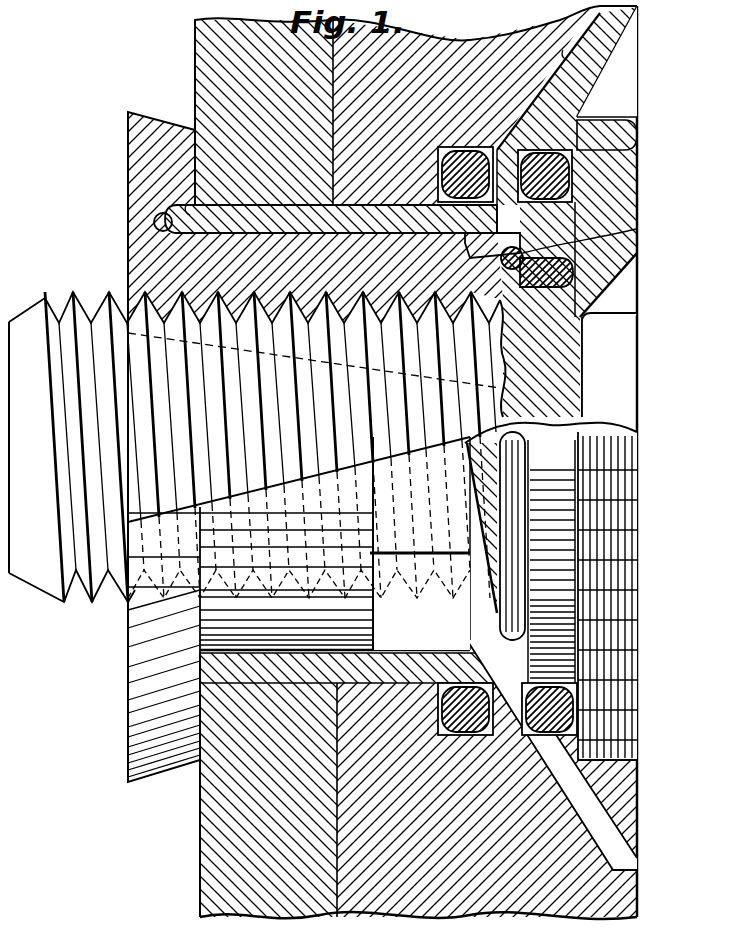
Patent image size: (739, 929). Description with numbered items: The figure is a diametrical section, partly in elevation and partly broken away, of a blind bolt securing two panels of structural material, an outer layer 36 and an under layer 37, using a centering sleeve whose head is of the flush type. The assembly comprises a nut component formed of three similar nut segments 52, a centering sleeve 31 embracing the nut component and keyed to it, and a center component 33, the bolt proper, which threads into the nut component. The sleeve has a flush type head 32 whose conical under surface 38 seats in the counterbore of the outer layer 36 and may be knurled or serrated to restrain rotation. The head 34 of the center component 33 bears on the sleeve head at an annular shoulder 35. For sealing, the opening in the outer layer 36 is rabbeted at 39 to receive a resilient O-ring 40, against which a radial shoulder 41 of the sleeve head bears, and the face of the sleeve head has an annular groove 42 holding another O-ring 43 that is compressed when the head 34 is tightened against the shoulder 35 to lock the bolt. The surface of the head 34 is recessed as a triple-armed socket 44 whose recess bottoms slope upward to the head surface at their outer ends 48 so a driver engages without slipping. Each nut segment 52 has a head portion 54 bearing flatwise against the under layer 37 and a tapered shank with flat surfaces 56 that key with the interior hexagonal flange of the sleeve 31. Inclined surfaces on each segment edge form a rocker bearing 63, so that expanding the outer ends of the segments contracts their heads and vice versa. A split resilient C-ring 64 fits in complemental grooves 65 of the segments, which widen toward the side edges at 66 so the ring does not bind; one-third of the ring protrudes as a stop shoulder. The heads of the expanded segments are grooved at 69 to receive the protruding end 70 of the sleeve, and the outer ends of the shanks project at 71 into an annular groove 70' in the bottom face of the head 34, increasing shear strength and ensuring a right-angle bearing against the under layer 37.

The centering sleeve 31 is at (252, 216).
The flush type head 32 is at (582, 90).
The center component 33 is at (69, 322).
The head of the center component 34 is at (620, 207).
The annular shoulder 35 is at (592, 132).
The outer layer of structural material 36 is at (408, 60).
The under layer of structural material 37 is at (252, 62).
The conical under surface 38 is at (565, 57).
The rabbeted annular recess 39 is at (478, 205).
The resilient O-ring 40 is at (492, 245).
The radial shoulder 41 is at (607, 62).
The annular groove 42 is at (494, 155).
The O-ring 43 is at (548, 172).
The triple-armed socket 44 is at (622, 404).
The outer ends of the recesses 48 is at (597, 309).
The nut segments 52 is at (213, 250).
The head portion 54 is at (130, 121).
The flat surfaces 56 is at (403, 235).
The rocker bearing 63 is at (585, 423).
The C-ring 64 is at (636, 229).
The grooves 65 is at (600, 318).
The widened groove portion 66 is at (487, 500).
The groove in nut segment heads 69 is at (158, 217).
The protruding end of the sleeve 70 is at (136, 178).
The annular groove 70' is at (602, 272).
The outer ends of the shanks 71 is at (523, 262).